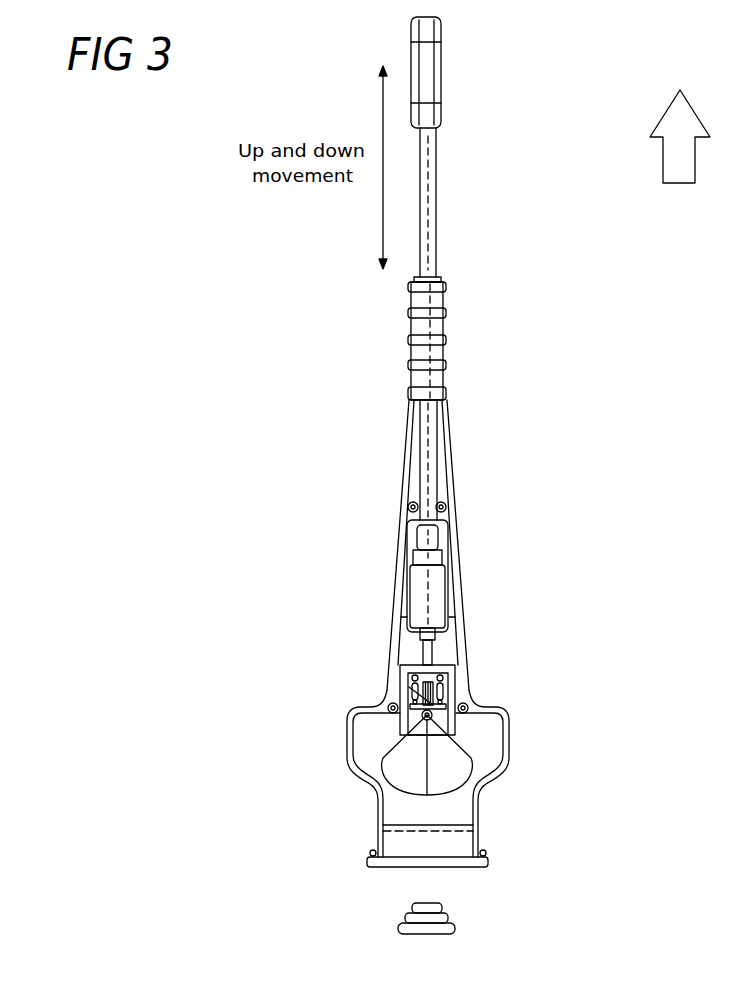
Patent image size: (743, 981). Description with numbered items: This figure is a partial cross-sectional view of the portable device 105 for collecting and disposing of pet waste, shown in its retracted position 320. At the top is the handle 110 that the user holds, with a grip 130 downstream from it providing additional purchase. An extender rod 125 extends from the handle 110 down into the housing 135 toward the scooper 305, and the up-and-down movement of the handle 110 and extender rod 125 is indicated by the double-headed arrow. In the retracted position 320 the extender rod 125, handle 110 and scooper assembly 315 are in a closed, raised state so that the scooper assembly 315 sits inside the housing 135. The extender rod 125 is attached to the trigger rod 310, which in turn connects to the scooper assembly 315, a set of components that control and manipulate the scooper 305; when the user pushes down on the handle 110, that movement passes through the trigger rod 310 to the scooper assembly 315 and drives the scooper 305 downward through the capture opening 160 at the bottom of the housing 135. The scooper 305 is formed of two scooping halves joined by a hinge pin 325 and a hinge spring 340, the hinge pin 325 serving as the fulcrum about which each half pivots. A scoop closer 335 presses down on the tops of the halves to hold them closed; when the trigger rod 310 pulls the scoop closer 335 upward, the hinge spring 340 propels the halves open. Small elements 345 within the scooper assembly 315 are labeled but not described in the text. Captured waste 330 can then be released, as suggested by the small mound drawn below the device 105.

The portable device 105 is at (622, 273).
The handle 110 is at (442, 67).
The extender rod 125 is at (437, 207).
The grip 130 is at (447, 362).
The housing 135 is at (449, 509).
The capture opening 160 is at (489, 857).
The scooper 305 is at (458, 774).
The trigger rod 310 is at (433, 660).
The scooper assembly 315 is at (337, 683).
The retracted position 320 is at (585, 136).
The hinge pin 325 is at (446, 704).
The waste 330 is at (456, 927).
The scoop closer 335 is at (449, 689).
The hinge spring 340 is at (409, 687).
The pins 345 is at (438, 676).